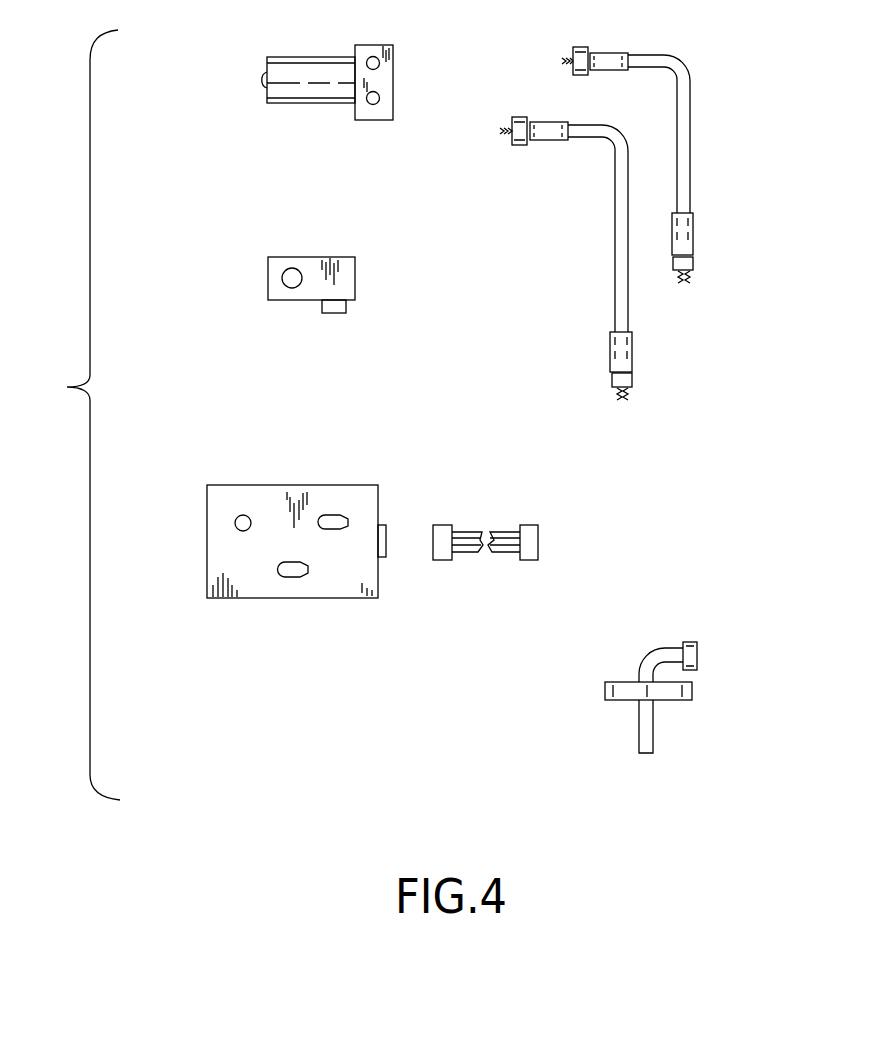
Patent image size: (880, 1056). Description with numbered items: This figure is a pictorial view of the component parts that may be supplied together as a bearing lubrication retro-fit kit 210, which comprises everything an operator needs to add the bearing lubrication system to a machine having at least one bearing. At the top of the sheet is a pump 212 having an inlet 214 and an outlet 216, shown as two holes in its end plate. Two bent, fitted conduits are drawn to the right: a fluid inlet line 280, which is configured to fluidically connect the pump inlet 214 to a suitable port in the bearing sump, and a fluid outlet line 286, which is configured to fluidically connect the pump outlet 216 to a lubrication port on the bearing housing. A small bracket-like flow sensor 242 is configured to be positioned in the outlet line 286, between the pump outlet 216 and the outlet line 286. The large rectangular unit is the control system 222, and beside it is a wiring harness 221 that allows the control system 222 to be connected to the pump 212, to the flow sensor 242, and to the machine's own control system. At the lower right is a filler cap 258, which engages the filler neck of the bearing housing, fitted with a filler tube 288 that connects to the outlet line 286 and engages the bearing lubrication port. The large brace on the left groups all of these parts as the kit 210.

The retro-fit kit 210 is at (71, 415).
The pump 212 is at (293, 105).
The inlet 214 is at (380, 63).
The outlet 216 is at (380, 97).
The flow sensor 242 is at (295, 300).
The fluid inlet line 280 is at (690, 148).
The fluid outlet line 286 is at (615, 200).
The control system 222 is at (207, 548).
The wiring harness 221 is at (530, 525).
The filler cap 258 is at (615, 693).
The filler tube 288 is at (653, 735).